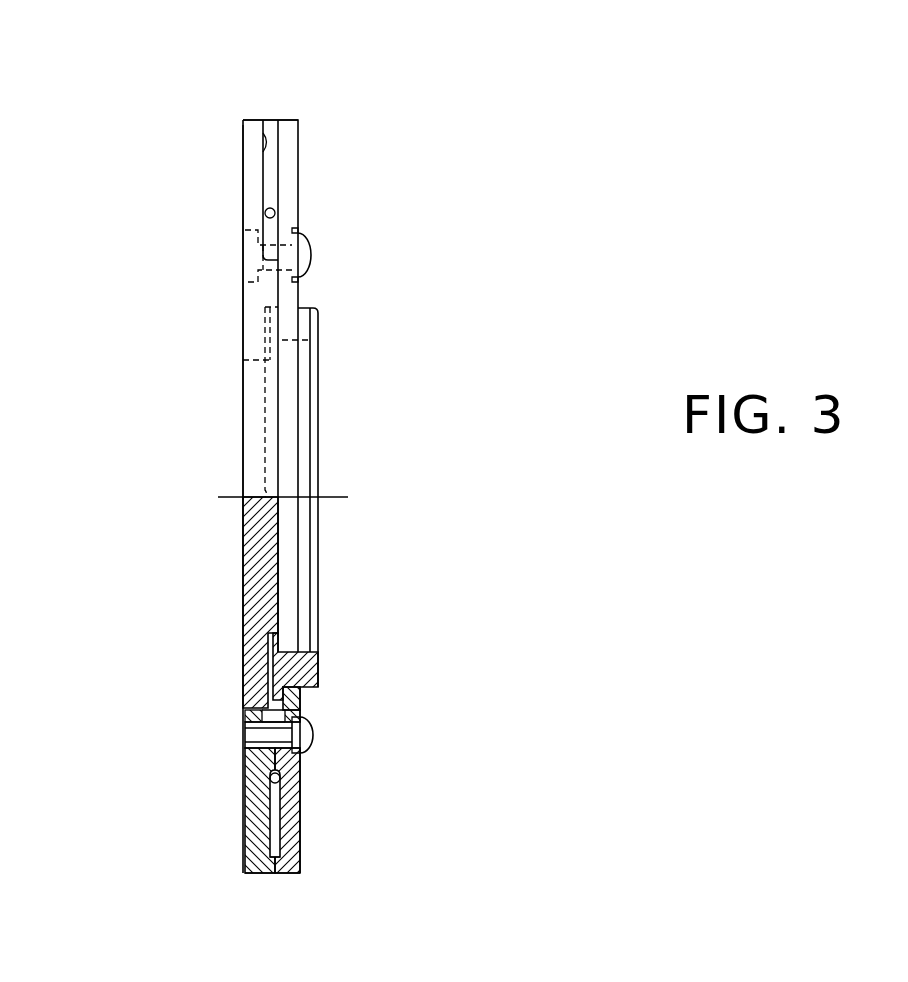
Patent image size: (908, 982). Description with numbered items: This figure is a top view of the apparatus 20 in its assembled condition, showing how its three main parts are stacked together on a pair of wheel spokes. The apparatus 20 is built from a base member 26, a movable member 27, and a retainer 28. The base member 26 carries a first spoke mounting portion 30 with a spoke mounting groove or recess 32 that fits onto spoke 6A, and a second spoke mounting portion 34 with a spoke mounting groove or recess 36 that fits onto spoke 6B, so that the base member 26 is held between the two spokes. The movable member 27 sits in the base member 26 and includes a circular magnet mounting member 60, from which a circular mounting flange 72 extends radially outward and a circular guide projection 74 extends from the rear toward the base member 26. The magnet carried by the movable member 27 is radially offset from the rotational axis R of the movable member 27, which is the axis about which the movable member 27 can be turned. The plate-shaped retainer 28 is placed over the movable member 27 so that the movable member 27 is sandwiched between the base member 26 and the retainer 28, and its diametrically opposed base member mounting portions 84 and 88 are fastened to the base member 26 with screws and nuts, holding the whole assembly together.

The apparatus 20 is at (140, 117).
The base member 26 is at (230, 312).
The movable member 27 is at (345, 304).
The retainer 28 is at (310, 154).
The first spoke mounting portion 30 is at (245, 852).
The spoke mounting groove or recess 32 is at (272, 820).
The second spoke mounting portion 34 is at (243, 143).
The spoke mounting groove or recess 36 is at (265, 138).
The circular magnet mounting member 60 is at (320, 665).
The circular mounting flange 72 is at (300, 698).
The circular guide projection 74 is at (254, 571).
The base member mounting portion 84 is at (297, 850).
The base member mounting portion 88 is at (292, 183).
The spoke 6A is at (270, 773).
The spoke 6B is at (265, 212).
The rotational axis R is at (332, 497).